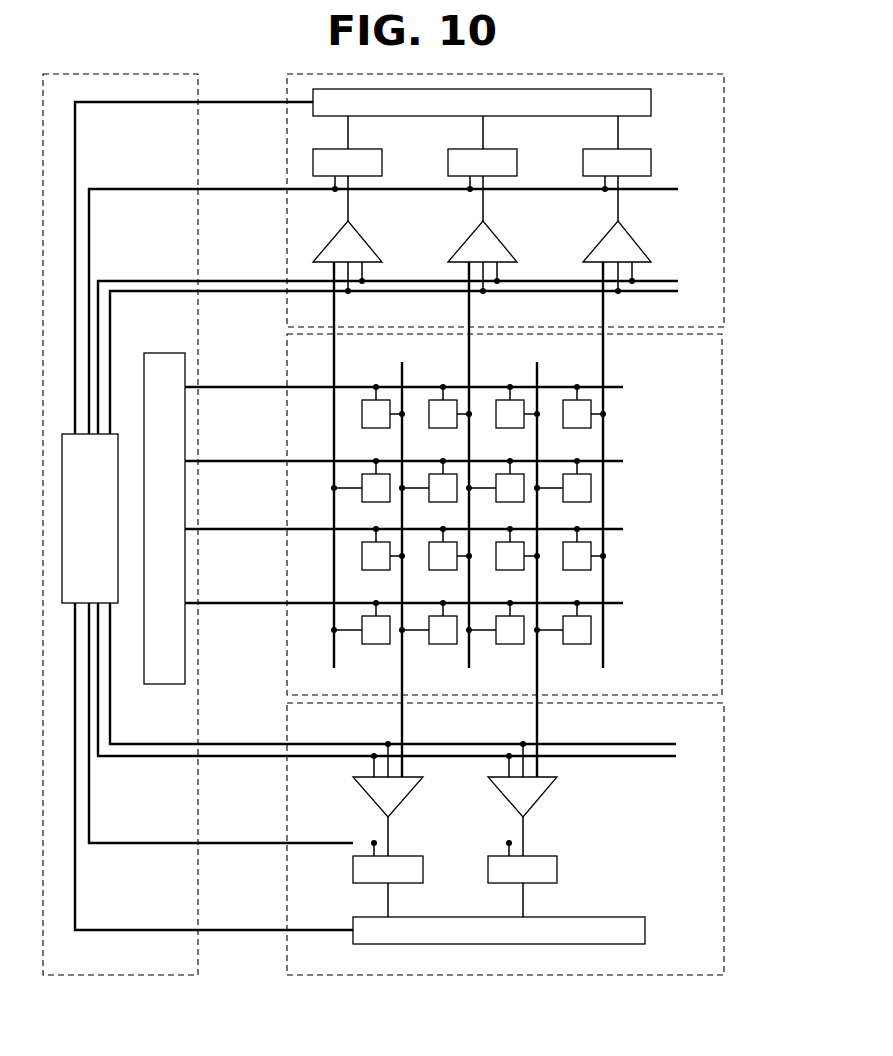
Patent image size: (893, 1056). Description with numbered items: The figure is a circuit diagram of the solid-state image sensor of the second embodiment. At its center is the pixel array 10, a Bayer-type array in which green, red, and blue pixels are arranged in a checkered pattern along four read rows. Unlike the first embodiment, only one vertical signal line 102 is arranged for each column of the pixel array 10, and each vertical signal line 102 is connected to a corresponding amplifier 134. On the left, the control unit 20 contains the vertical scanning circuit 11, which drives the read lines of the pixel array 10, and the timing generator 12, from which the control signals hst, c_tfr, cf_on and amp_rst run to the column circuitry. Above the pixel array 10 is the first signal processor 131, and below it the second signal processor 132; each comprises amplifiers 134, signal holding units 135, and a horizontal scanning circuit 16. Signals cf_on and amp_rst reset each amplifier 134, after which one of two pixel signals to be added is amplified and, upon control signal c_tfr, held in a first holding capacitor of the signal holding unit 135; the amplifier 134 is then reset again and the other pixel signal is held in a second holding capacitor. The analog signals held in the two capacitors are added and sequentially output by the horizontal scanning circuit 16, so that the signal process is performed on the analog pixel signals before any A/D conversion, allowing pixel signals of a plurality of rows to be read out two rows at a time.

The pixel array 10 is at (722, 372).
The vertical scanning circuit 11 is at (185, 661).
The timing generator 12 is at (73, 433).
The horizontal scanning circuit 16 is at (651, 95).
The control unit 20 is at (135, 975).
The vertical signal line 102 is at (605, 642).
The first signal processor 131 is at (547, 200).
The second signal processor 132 is at (724, 738).
The amplifier 134 is at (636, 240).
The signal holding unit 135 is at (651, 158).